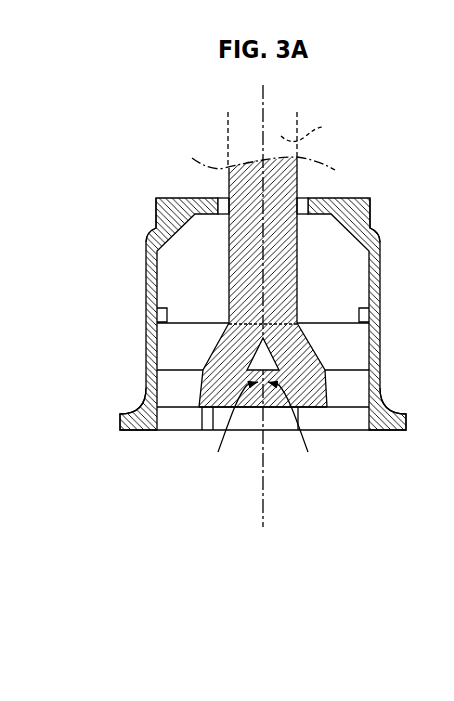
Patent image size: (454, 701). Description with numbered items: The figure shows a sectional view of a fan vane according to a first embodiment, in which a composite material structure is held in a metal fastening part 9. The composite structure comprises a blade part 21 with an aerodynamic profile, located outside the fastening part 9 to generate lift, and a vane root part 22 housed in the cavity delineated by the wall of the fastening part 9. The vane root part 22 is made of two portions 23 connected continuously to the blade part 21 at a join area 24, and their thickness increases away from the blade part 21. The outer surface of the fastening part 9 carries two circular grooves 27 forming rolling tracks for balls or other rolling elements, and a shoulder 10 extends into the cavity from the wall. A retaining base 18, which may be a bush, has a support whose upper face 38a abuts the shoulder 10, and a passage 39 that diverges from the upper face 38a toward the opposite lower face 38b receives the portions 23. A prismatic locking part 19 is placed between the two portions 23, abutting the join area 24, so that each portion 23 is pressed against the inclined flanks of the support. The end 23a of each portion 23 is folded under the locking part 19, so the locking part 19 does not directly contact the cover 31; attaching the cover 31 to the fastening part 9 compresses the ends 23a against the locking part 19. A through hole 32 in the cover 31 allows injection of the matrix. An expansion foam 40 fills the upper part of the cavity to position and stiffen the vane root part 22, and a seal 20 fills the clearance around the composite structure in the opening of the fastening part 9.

The fastening part 9 is at (354, 208).
The shoulder 10 is at (167, 316).
The retaining base 18 is at (331, 359).
The locking part 19 is at (320, 364).
The seal 20 is at (300, 207).
The blade part 21 is at (314, 129).
The vane root part 22 is at (247, 190).
The portions 23 is at (205, 388).
The end of the portions 23a is at (262, 426).
The join area 24 is at (262, 337).
The circular grooves 27 is at (152, 226).
The cover 31 is at (247, 412).
The through hole 32 is at (203, 418).
The upper face of the support 38a is at (333, 320).
The lower face of the support 38b is at (175, 374).
The passage 39 is at (212, 340).
The expansion foam 40 is at (317, 279).